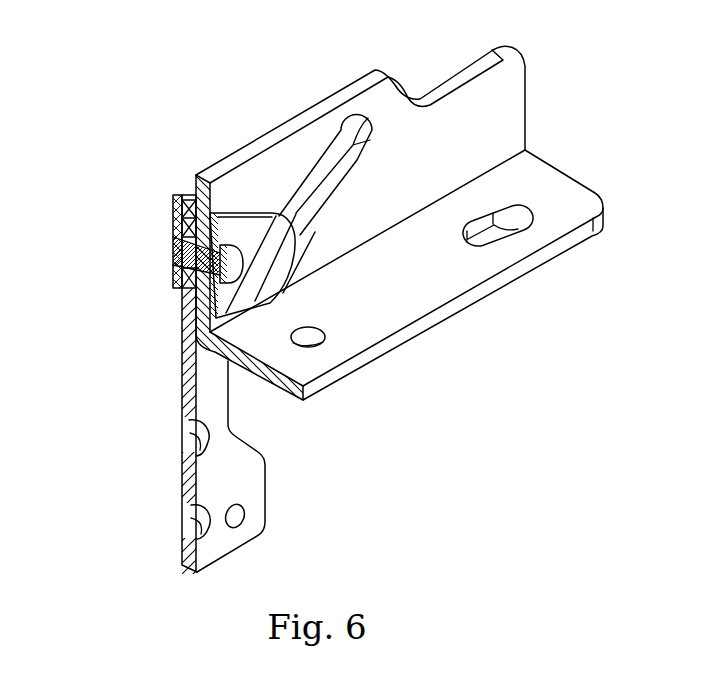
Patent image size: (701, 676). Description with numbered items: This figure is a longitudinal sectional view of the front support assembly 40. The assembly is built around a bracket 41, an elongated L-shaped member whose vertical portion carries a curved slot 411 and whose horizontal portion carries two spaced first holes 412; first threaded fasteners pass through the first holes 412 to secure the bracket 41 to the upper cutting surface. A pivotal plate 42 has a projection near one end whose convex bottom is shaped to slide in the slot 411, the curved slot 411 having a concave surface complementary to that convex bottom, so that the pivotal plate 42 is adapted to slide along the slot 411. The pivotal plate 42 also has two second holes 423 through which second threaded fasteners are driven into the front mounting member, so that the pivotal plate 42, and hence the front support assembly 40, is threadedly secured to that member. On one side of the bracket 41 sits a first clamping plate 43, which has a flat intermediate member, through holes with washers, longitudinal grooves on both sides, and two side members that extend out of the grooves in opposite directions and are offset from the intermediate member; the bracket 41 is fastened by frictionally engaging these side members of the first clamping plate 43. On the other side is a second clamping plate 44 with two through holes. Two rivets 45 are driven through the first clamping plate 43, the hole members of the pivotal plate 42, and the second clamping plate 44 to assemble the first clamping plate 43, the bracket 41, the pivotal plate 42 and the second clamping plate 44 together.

The front support assembly 40 is at (311, 226).
The bracket 41 is at (390, 272).
The curved slot 411 is at (318, 192).
The first holes 412 is at (512, 220).
The pivotal plate 42 is at (243, 387).
The second holes 423 is at (193, 525).
The first clamping plate 43 is at (221, 234).
The second clamping plate 44 is at (173, 217).
The rivets 45 is at (233, 268).